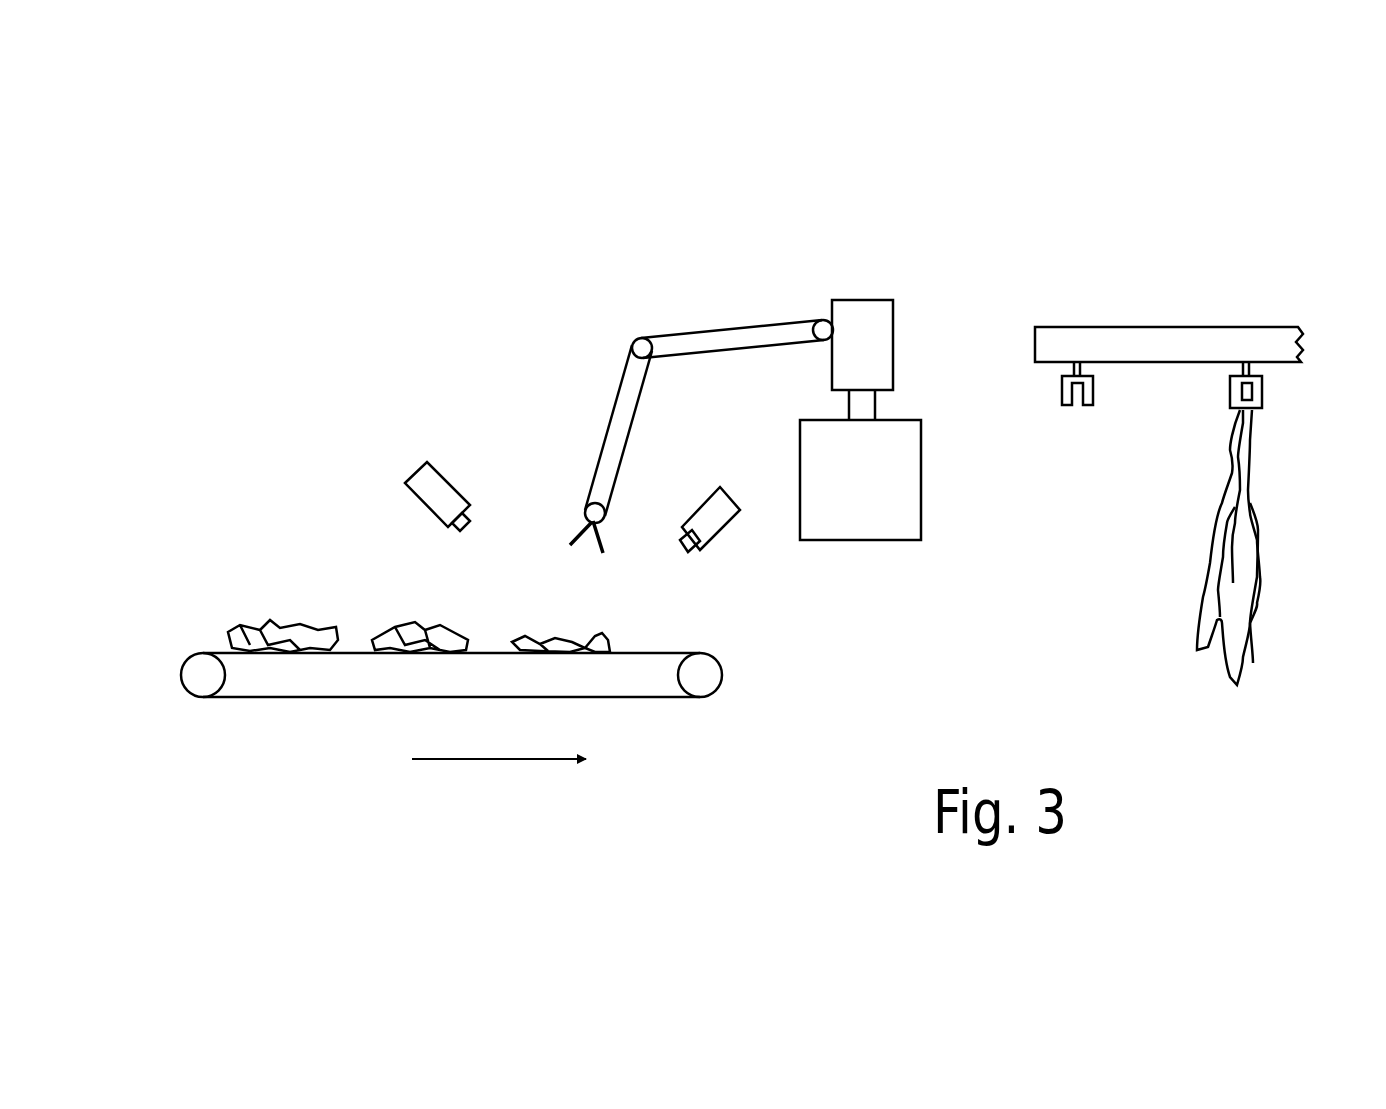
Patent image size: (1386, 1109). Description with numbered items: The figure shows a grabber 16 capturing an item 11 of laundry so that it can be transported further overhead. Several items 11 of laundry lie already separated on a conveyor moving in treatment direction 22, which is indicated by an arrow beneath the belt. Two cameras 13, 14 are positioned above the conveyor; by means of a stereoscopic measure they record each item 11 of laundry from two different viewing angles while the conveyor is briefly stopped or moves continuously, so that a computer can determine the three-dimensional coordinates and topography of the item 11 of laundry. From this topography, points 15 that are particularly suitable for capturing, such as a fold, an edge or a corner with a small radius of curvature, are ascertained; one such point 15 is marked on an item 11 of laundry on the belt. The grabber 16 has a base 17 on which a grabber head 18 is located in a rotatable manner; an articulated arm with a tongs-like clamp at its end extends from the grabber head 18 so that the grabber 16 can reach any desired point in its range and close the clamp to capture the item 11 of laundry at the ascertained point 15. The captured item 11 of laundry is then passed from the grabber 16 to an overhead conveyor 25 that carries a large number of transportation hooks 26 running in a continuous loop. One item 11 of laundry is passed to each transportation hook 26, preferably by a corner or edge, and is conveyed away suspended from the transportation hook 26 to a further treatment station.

The item of laundry 11 is at (292, 633).
The camera 13 is at (433, 462).
The camera 14 is at (722, 532).
The point 15 is at (602, 638).
The grabber 16 is at (698, 316).
The base 17 is at (921, 450).
The grabber head 18 is at (876, 300).
The treatment direction 22 is at (492, 762).
The overhead conveyor 25 is at (1155, 314).
The transportation hook 26 is at (1063, 407).